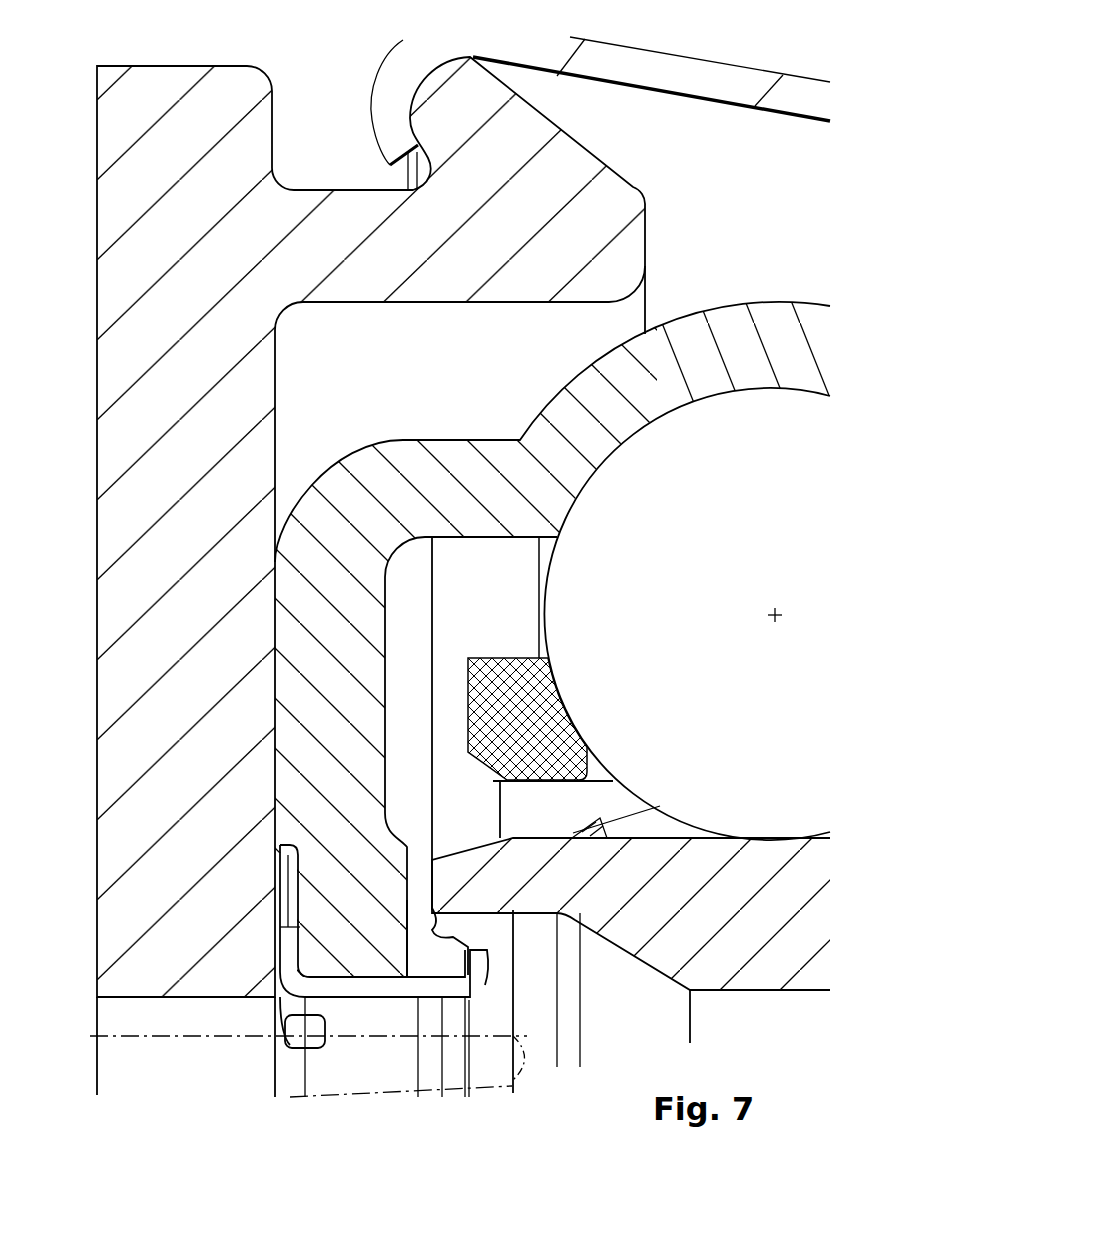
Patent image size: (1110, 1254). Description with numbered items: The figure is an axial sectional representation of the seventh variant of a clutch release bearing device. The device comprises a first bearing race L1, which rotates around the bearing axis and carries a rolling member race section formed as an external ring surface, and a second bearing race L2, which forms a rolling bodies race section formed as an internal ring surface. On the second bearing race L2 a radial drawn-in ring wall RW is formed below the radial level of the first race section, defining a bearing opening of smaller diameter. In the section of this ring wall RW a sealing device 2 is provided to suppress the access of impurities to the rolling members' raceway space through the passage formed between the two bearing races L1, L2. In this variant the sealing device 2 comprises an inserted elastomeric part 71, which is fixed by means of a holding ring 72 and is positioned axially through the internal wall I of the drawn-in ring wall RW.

The ring wall RW is at (297, 797).
The second bearing race L2 is at (740, 325).
The first bearing race L1 is at (743, 972).
The internal wall I is at (410, 885).
The elastomeric part 71 is at (398, 910).
The holding ring 72 is at (368, 985).
The sealing device 2 is at (484, 960).